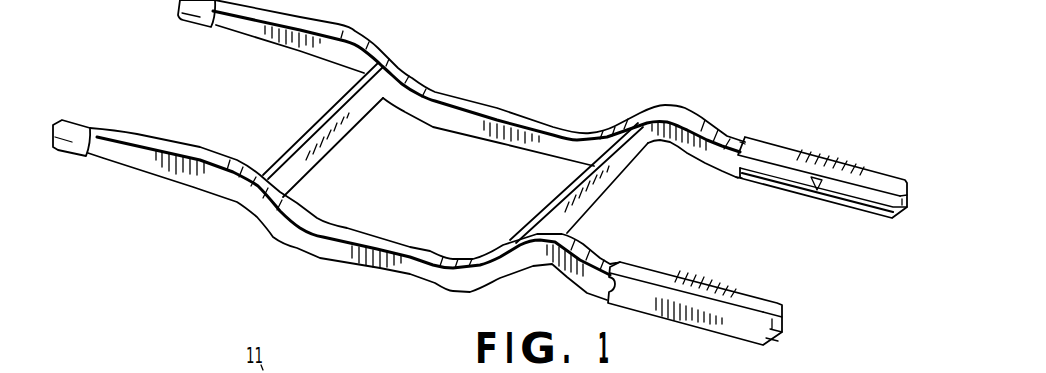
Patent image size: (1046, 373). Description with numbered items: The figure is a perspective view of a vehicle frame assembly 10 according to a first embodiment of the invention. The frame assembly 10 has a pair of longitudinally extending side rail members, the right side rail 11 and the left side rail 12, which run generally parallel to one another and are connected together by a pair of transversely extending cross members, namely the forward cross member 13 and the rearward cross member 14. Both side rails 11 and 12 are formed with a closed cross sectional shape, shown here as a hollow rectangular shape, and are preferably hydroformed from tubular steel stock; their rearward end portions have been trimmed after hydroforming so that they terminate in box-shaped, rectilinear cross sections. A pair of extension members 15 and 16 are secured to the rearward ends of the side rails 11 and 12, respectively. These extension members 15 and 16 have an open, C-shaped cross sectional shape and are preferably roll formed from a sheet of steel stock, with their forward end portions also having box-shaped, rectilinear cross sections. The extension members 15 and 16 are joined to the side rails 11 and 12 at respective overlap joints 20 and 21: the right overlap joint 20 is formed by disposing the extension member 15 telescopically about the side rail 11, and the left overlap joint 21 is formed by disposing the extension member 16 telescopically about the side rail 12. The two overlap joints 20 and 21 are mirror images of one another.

The vehicle frame assembly 10 is at (399, 154).
The right side rail 11 is at (497, 138).
The left side rail 12 is at (355, 262).
The forward cross member 13 is at (335, 140).
The rearward cross member 14 is at (605, 185).
The extension member 15 is at (824, 139).
The extension member 16 is at (714, 278).
The right overlap joint 20 is at (795, 147).
The left overlap joint 21 is at (678, 271).